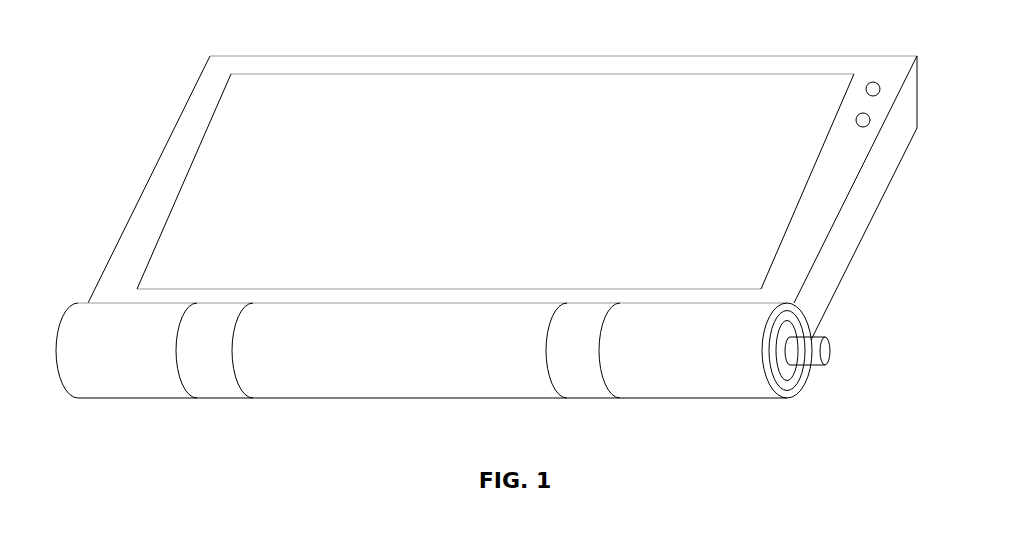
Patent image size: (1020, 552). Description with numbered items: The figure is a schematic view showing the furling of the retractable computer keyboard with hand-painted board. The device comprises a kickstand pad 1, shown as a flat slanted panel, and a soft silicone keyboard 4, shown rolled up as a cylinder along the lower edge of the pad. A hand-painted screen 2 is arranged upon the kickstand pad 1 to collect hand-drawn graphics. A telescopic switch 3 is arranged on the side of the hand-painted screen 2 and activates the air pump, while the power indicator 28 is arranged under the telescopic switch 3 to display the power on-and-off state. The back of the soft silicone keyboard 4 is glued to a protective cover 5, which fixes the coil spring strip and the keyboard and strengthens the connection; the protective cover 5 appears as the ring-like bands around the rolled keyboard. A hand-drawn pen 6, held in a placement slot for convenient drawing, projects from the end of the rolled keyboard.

The kickstand pad 1 is at (835, 168).
The hand-painted screen 2 is at (777, 200).
The telescopic switch 3 is at (880, 91).
The power indicator 28 is at (870, 123).
The soft silicone keyboard 4 is at (737, 315).
The protective cover 5 is at (579, 353).
The hand-drawn pen 6 is at (808, 350).